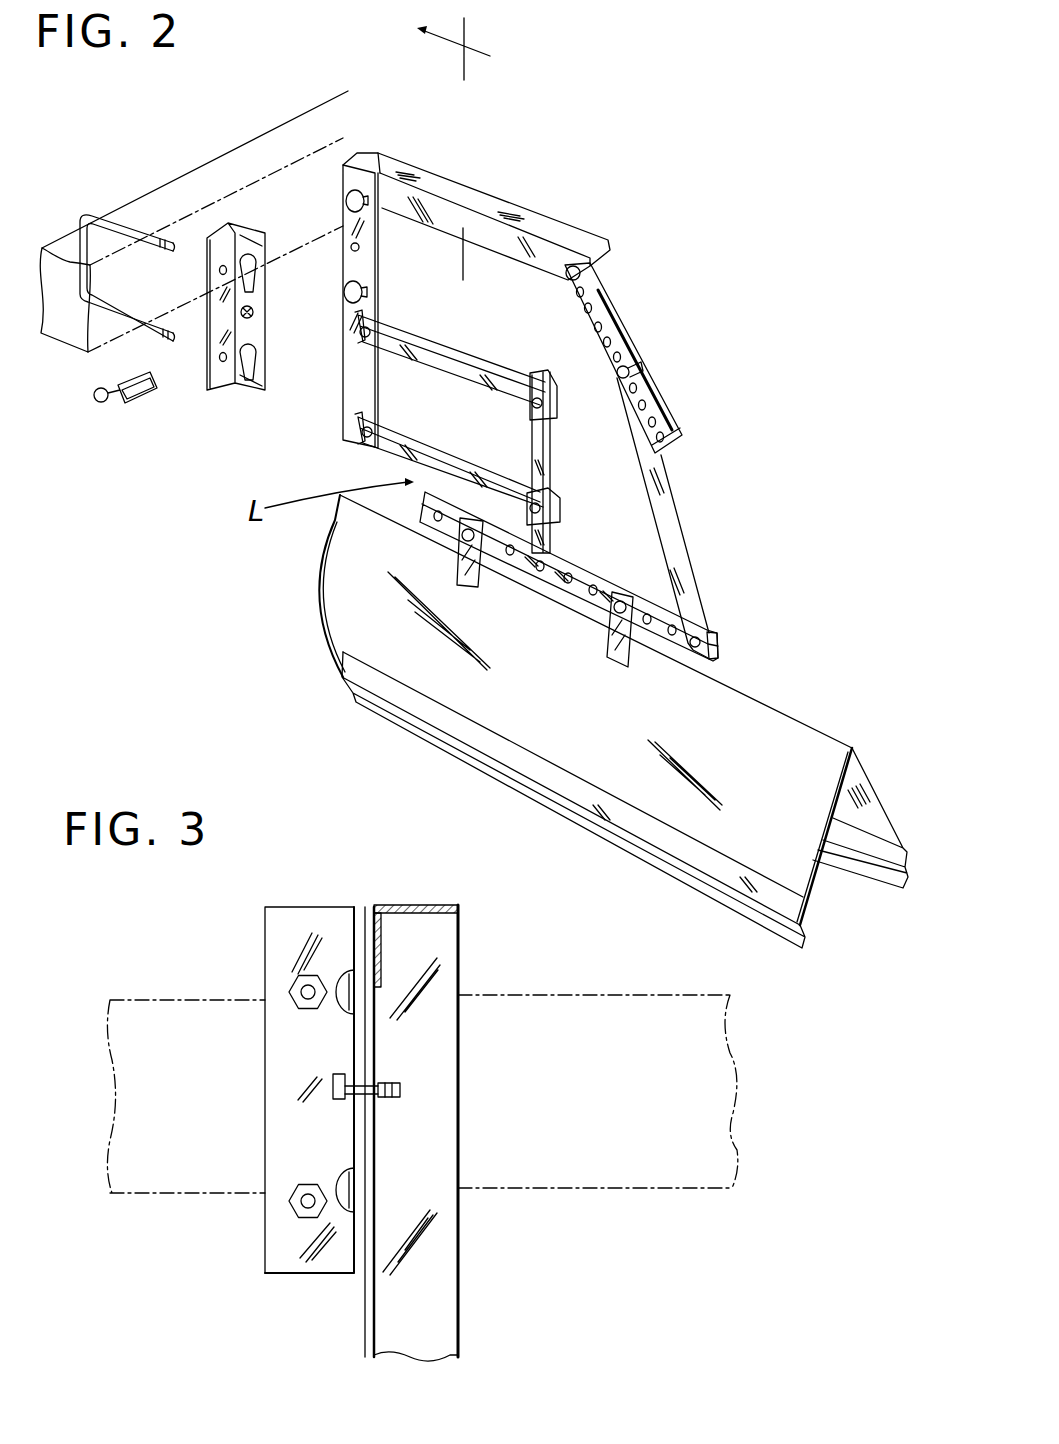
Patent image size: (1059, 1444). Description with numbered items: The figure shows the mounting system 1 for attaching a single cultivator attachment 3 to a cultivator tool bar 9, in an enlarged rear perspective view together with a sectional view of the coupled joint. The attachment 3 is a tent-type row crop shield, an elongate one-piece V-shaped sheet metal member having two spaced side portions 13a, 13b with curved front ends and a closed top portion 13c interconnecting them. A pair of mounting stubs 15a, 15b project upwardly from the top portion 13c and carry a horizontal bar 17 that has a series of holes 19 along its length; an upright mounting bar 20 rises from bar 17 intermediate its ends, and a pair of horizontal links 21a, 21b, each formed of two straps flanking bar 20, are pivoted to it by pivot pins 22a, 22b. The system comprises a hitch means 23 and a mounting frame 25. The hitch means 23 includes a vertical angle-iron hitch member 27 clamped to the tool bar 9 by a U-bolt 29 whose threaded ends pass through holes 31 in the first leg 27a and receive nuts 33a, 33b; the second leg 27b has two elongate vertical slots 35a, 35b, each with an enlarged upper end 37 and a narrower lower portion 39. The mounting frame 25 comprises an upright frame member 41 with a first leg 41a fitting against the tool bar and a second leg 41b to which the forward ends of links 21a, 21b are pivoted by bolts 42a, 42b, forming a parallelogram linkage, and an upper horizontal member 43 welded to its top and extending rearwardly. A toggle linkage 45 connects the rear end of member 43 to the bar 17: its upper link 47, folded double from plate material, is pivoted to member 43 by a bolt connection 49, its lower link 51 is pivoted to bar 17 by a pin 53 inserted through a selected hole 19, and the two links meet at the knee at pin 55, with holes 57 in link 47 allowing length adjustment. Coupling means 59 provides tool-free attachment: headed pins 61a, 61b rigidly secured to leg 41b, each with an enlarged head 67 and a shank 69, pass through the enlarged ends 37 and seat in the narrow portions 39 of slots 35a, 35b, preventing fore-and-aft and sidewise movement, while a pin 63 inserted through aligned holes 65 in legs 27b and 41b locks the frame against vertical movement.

In FIG. 2, the mounting system 1 is at (742, 265).
In FIG. 2, the cultivator attachment 3 is at (862, 657).
In FIG. 2, the tool bar 9 is at (283, 103).
In FIG. 3, the tool bar 9 is at (570, 995).
In FIG. 2, the side portion 13a is at (794, 870).
In FIG. 2, the side portion 13b is at (888, 817).
In FIG. 2, the top portion 13c is at (813, 731).
In FIG. 2, the mounting stub 15a is at (485, 585).
In FIG. 2, the mounting stub 15b is at (640, 635).
In FIG. 2, the horizontal bar 17 is at (593, 571).
In FIG. 2, the holes 19 is at (586, 568).
In FIG. 2, the upright mounting bar 20 is at (552, 460).
In FIG. 2, the horizontal link 21a is at (415, 467).
In FIG. 2, the horizontal link 21b is at (473, 360).
In FIG. 2, the pivot pin or bolt 22a is at (548, 531).
In FIG. 2, the pivot pin or bolt 22b is at (548, 404).
In FIG. 2, the hitch means 23 is at (182, 186).
In FIG. 3, the hitch means 23 is at (236, 981).
In FIG. 2, the mounting frame 25 is at (602, 205).
In FIG. 3, the mounting frame 25 is at (442, 876).
In FIG. 2, the hitch member 27 is at (196, 368).
In FIG. 3, the hitch member 27 is at (250, 1121).
In FIG. 2, the first leg or flange 27a is at (222, 309).
In FIG. 3, the first leg or flange 27a is at (290, 1072).
In FIG. 2, the second leg or flange 27b is at (250, 238).
In FIG. 3, the second leg or flange 27b is at (354, 1223).
In FIG. 2, the U-bolt 29 is at (121, 212).
In FIG. 2, the holes 31 is at (224, 266).
In FIG. 3, the nut 33a is at (293, 985).
In FIG. 3, the nut 33b is at (287, 1193).
In FIG. 2, the elongate vertical slot 35a is at (264, 275).
In FIG. 2, the elongate vertical slot 35b is at (268, 370).
In FIG. 2, the enlarged upper end 37 is at (257, 260).
In FIG. 2, the narrower lower portion 39 is at (258, 294).
In FIG. 2, the upright frame member 41 is at (386, 381).
In FIG. 3, the upright frame member 41 is at (468, 1125).
In FIG. 2, the first flange or leg 41a is at (358, 150).
In FIG. 3, the first flange or leg 41a is at (437, 1067).
In FIG. 2, the leg 41b is at (352, 388).
In FIG. 3, the leg 41b is at (377, 1157).
In FIG. 2, the bolt 42a is at (400, 336).
In FIG. 2, the bolt 42b is at (400, 428).
In FIG. 2, the upper horizontal member 43 is at (490, 186).
In FIG. 3, the upper horizontal member 43 is at (382, 918).
In FIG. 2, the toggle linkage 45 is at (736, 432).
In FIG. 2, the upper link 47 is at (632, 340).
In FIG. 2, the pin or bolt connection 49 is at (593, 275).
In FIG. 2, the lower link 51 is at (680, 523).
In FIG. 2, the pin or bolt connection 53 is at (715, 633).
In FIG. 2, the pin 55 is at (635, 375).
In FIG. 2, the holes 57 is at (618, 327).
In FIG. 2, the coupling means 59 is at (382, 199).
In FIG. 2, the headed pin 61a is at (452, 256).
In FIG. 3, the headed pin 61a is at (323, 955).
In FIG. 2, the headed pin 61b is at (385, 290).
In FIG. 3, the headed pin 61b is at (320, 1170).
In FIG. 2, the pin 63 is at (112, 389).
In FIG. 3, the pin 63 is at (400, 1085).
In FIG. 2, the holes 65 is at (346, 290).
In FIG. 2, the enlarged head 67 is at (386, 165).
In FIG. 3, the enlarged head 67 is at (337, 1008).
In FIG. 2, the shank 69 is at (366, 197).
In FIG. 3, the shank 69 is at (350, 943).